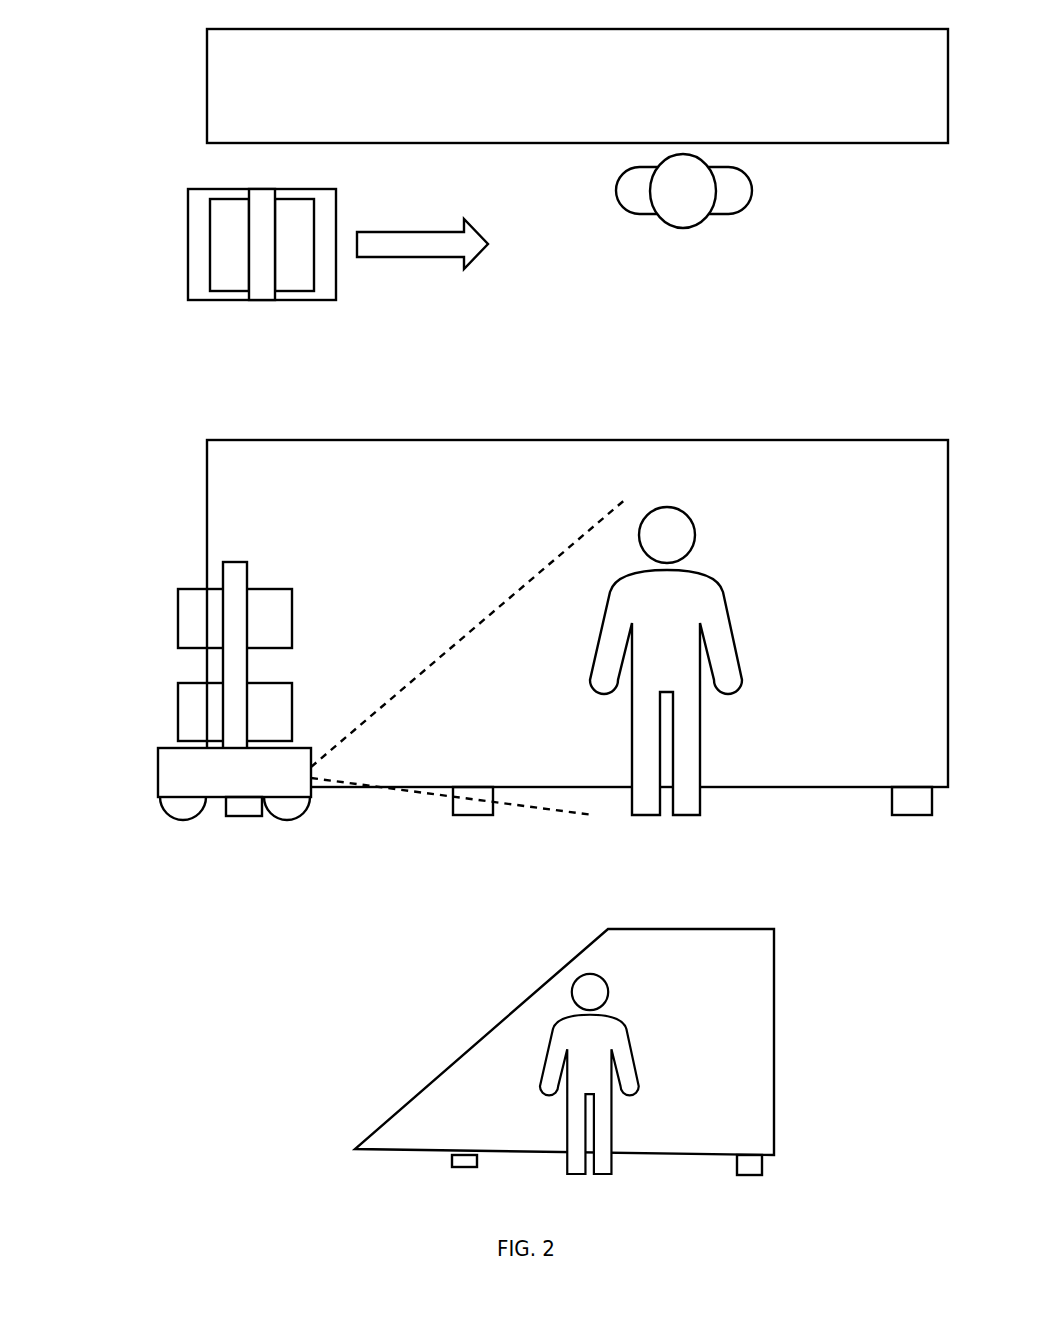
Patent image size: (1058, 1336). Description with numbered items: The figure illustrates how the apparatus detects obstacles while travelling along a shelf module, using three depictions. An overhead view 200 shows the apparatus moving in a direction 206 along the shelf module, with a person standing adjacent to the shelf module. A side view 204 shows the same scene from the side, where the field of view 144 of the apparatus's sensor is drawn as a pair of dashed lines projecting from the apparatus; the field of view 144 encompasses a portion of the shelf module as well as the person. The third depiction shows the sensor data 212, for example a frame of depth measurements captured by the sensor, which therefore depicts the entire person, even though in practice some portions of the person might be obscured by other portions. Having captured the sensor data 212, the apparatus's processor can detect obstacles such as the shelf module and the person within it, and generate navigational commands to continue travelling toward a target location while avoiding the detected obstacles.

The overhead view 200 is at (165, 56).
The direction 206 is at (422, 256).
The side view 204 is at (164, 478).
The field of view 144 is at (443, 658).
The sensor data 212 is at (416, 1003).